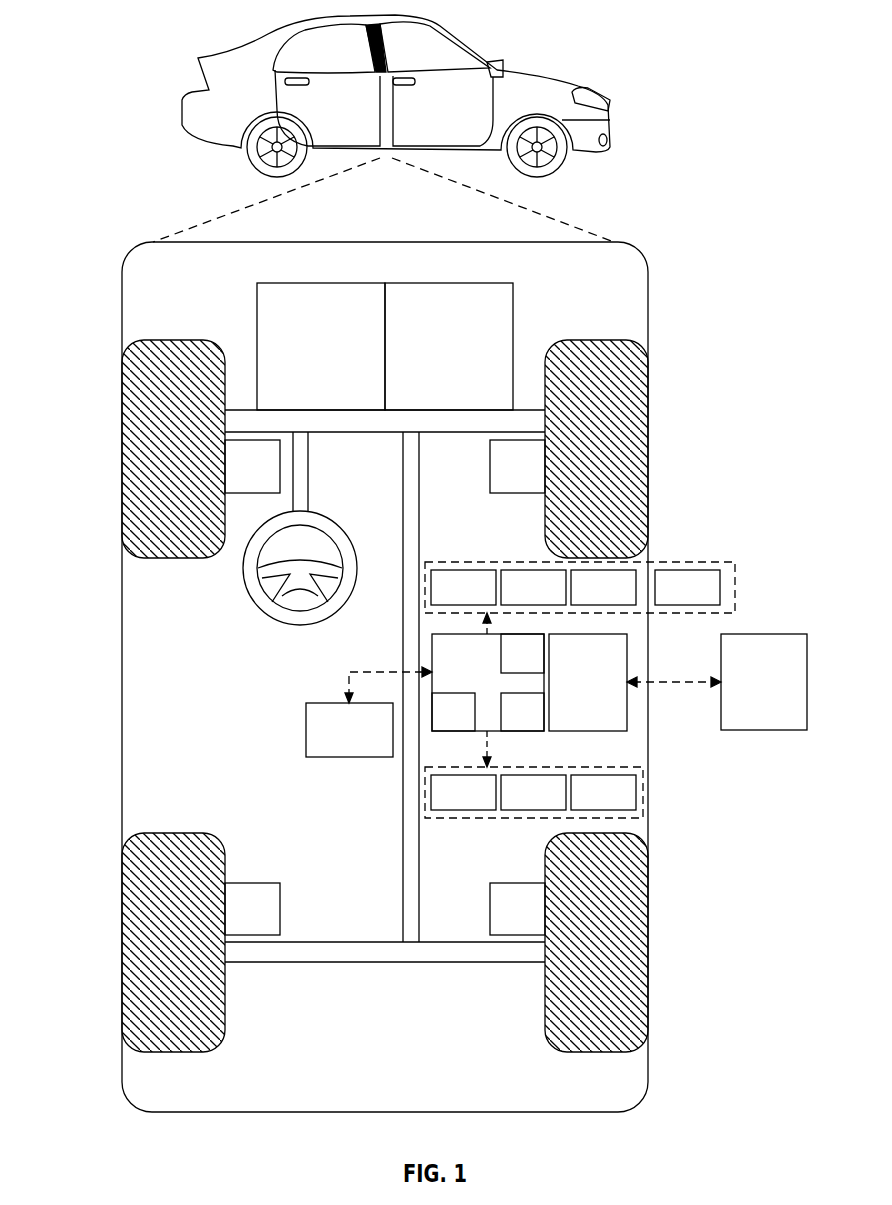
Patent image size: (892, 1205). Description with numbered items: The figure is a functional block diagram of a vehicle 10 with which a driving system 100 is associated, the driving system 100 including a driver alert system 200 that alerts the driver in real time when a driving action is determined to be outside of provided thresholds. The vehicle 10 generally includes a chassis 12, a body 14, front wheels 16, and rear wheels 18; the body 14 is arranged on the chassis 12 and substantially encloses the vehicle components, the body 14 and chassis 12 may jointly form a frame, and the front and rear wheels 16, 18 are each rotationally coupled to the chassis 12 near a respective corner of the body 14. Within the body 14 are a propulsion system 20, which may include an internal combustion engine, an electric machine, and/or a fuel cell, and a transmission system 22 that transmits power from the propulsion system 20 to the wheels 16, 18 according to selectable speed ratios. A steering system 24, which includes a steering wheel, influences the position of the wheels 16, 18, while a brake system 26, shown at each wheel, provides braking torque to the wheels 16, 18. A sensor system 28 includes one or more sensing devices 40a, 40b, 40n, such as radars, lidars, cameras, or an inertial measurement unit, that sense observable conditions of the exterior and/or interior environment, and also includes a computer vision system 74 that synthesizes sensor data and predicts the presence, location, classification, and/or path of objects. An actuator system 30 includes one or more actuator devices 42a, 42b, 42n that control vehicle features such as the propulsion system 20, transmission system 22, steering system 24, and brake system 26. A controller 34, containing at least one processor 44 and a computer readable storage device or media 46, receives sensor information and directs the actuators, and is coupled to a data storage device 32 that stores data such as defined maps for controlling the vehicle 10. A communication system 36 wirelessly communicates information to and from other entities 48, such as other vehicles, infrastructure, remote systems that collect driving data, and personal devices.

The vehicle 10 is at (192, 90).
The driving system 100 is at (666, 263).
The chassis 12 is at (403, 845).
The body 14 is at (122, 636).
The front wheels 16 is at (175, 340).
The rear wheels 18 is at (172, 1052).
The propulsion system 20 is at (307, 359).
The transmission system 22 is at (435, 359).
The steering system 24 is at (312, 481).
The brake system 26 is at (238, 479).
The sensor system 28 is at (510, 561).
The actuator system 30 is at (503, 820).
The data storage device 32 is at (335, 743).
The controller 34 is at (454, 673).
The communication system 36 is at (574, 695).
The sensing device 40a is at (445, 601).
The sensing device 40b is at (515, 601).
The sensing device 40n is at (585, 601).
The actuator device 42a is at (445, 806).
The actuator device 42b is at (515, 806).
The actuator device 42n is at (585, 806).
The processor 44 is at (439, 725).
The computer readable storage device or media 46 is at (508, 725).
The other entities 48 is at (750, 695).
The computer vision system 74 is at (673, 601).
The driver alert system 200 is at (504, 663).